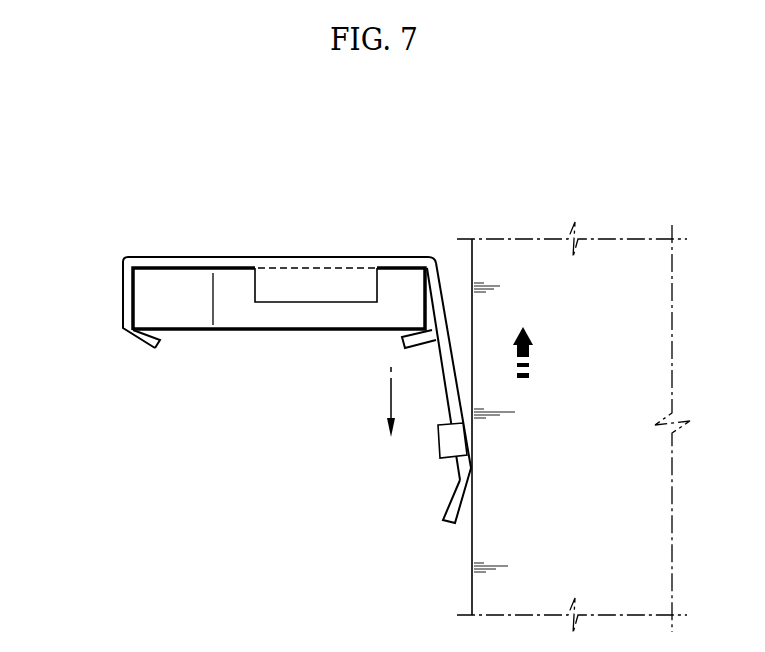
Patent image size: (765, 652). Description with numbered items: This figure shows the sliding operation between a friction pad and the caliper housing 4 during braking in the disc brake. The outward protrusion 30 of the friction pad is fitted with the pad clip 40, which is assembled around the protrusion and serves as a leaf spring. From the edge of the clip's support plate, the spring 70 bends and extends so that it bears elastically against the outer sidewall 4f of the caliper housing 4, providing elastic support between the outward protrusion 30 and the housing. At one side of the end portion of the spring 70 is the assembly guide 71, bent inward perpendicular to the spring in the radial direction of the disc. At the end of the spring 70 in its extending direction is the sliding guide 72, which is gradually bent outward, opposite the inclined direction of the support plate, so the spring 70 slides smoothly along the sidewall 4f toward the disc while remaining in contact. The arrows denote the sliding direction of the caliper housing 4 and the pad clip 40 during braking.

The caliper housing 4 is at (510, 253).
The outer sidewall of the caliper housing 4f is at (472, 255).
The outward protrusion 30 is at (148, 295).
The pad clip 40 is at (280, 247).
The spring 70 is at (437, 352).
The assembly guide 71 is at (440, 443).
The sliding guide 72 is at (445, 512).